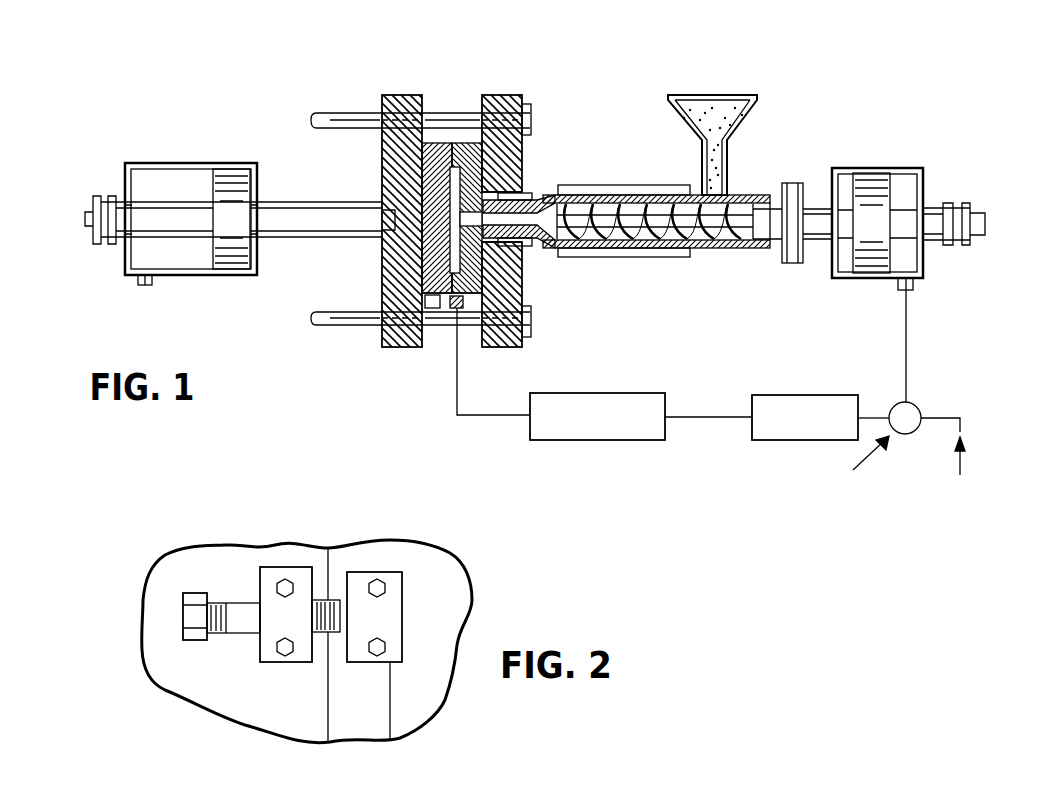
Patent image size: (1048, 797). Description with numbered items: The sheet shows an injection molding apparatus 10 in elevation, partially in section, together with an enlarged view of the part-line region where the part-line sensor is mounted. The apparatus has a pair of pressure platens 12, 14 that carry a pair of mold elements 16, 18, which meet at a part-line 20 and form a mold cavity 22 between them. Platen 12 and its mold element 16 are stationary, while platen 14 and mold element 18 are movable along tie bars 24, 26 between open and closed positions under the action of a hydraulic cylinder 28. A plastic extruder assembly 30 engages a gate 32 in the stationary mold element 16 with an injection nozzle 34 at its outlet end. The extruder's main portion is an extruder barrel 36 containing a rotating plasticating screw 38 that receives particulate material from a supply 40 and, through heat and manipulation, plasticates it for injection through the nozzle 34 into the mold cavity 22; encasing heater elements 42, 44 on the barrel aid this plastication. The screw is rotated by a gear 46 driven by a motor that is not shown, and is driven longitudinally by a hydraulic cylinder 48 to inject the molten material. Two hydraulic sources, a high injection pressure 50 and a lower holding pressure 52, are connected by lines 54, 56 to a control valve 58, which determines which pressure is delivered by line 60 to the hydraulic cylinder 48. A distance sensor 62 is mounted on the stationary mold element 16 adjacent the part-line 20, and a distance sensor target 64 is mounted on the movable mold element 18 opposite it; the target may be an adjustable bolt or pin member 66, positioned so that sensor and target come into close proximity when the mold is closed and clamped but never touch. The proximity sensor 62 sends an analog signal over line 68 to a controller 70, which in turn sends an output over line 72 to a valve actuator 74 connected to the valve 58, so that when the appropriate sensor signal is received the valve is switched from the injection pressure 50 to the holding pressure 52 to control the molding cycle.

In FIG. 1, the injection molding apparatus 10 is at (346, 86).
In FIG. 1, the pressure platen 12 is at (500, 95).
In FIG. 1, the pressure platen 14 is at (395, 95).
In FIG. 1, the mold element 16 is at (472, 105).
In FIG. 2, the mold element 16 is at (400, 555).
In FIG. 1, the mold element 18 is at (445, 143).
In FIG. 2, the mold element 18 is at (258, 557).
In FIG. 1, the part-line 20 is at (462, 143).
In FIG. 2, the part-line 20 is at (328, 545).
In FIG. 1, the mold cavity 22 is at (505, 172).
In FIG. 1, the tie bar 24 is at (325, 115).
In FIG. 1, the tie bar 26 is at (325, 312).
In FIG. 1, the hydraulic cylinder 28 is at (176, 163).
In FIG. 1, the plastic extruder assembly 30 is at (783, 114).
In FIG. 1, the gate 32 is at (500, 240).
In FIG. 1, the injection nozzle 34 is at (512, 203).
In FIG. 1, the extruder barrel 36 is at (708, 250).
In FIG. 1, the plasticating screw 38 is at (735, 197).
In FIG. 1, the supply 40 is at (728, 100).
In FIG. 1, the heater element 42 is at (645, 258).
In FIG. 1, the heater element 44 is at (530, 248).
In FIG. 1, the gear 46 is at (795, 183).
In FIG. 1, the hydraulic cylinder 48 is at (905, 168).
In FIG. 1, the injection pressure 50 is at (818, 508).
In FIG. 1, the holding pressure 52 is at (968, 486).
In FIG. 1, the line 54 is at (880, 437).
In FIG. 1, the line 56 is at (965, 434).
In FIG. 1, the control valve 58 is at (921, 410).
In FIG. 1, the line 60 is at (905, 339).
In FIG. 1, the distance sensor 62 is at (440, 312).
In FIG. 2, the distance sensor 62 is at (392, 635).
In FIG. 2, the distance sensor target 64 is at (270, 645).
In FIG. 2, the adjustable bolt or pin member 66 is at (322, 635).
In FIG. 1, the line 68 is at (455, 393).
In FIG. 2, the line 68 is at (392, 694).
In FIG. 1, the controller 70 is at (605, 400).
In FIG. 1, the line 72 is at (718, 418).
In FIG. 1, the valve actuator 74 is at (812, 398).